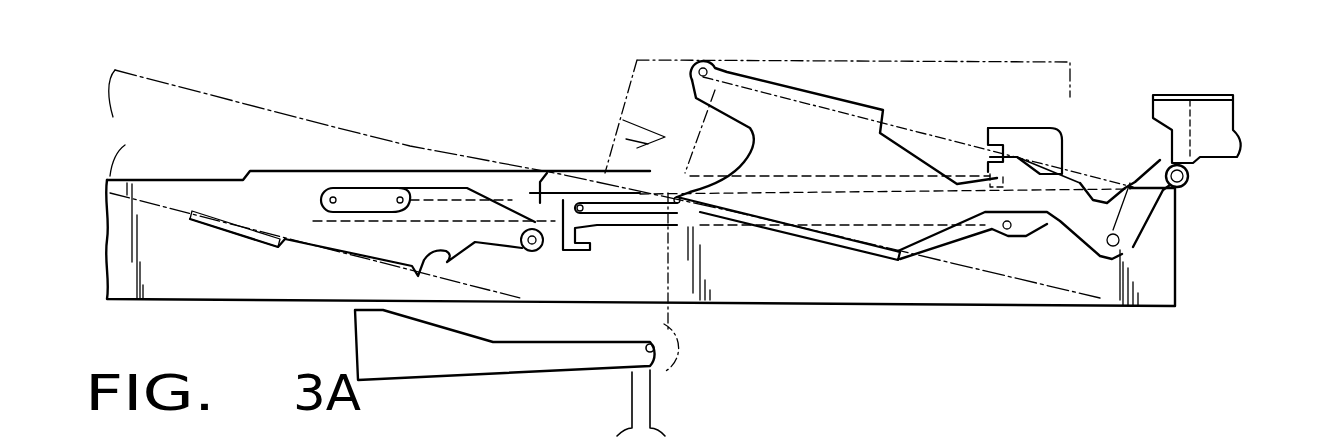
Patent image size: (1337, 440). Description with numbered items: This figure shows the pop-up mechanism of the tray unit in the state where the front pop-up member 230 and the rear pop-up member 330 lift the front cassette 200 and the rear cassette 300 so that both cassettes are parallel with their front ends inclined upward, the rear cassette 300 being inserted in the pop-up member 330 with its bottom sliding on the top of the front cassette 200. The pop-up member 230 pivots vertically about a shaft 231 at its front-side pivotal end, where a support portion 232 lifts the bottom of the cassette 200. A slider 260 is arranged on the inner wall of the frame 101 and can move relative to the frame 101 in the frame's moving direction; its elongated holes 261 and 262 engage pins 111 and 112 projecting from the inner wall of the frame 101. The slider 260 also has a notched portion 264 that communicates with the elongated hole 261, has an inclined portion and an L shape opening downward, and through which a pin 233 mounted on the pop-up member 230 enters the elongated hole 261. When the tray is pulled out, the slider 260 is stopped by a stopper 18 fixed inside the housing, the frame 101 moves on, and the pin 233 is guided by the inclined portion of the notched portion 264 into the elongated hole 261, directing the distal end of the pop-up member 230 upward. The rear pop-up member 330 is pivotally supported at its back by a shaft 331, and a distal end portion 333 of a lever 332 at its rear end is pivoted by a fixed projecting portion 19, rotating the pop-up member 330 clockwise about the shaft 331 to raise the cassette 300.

The stopper 18 is at (1012, 130).
The projecting portion 19 is at (1180, 108).
The frame 101 is at (265, 178).
The pin 111 is at (334, 190).
The pin 112 is at (587, 197).
The front cassette 200 is at (178, 90).
The pop-up member 230 is at (333, 232).
The shaft 231 is at (531, 252).
The support portion 232 is at (228, 231).
The pin 233 is at (410, 193).
The slider 260 is at (560, 197).
The elongated hole 261 is at (370, 189).
The elongated hole 262 is at (650, 212).
The notched portion 264 is at (578, 240).
The rear cassette 300 is at (672, 48).
The pop-up member 330 is at (813, 238).
The shaft 331 is at (1128, 243).
The lever 332 is at (1163, 212).
The distal end portion 333 is at (1163, 200).